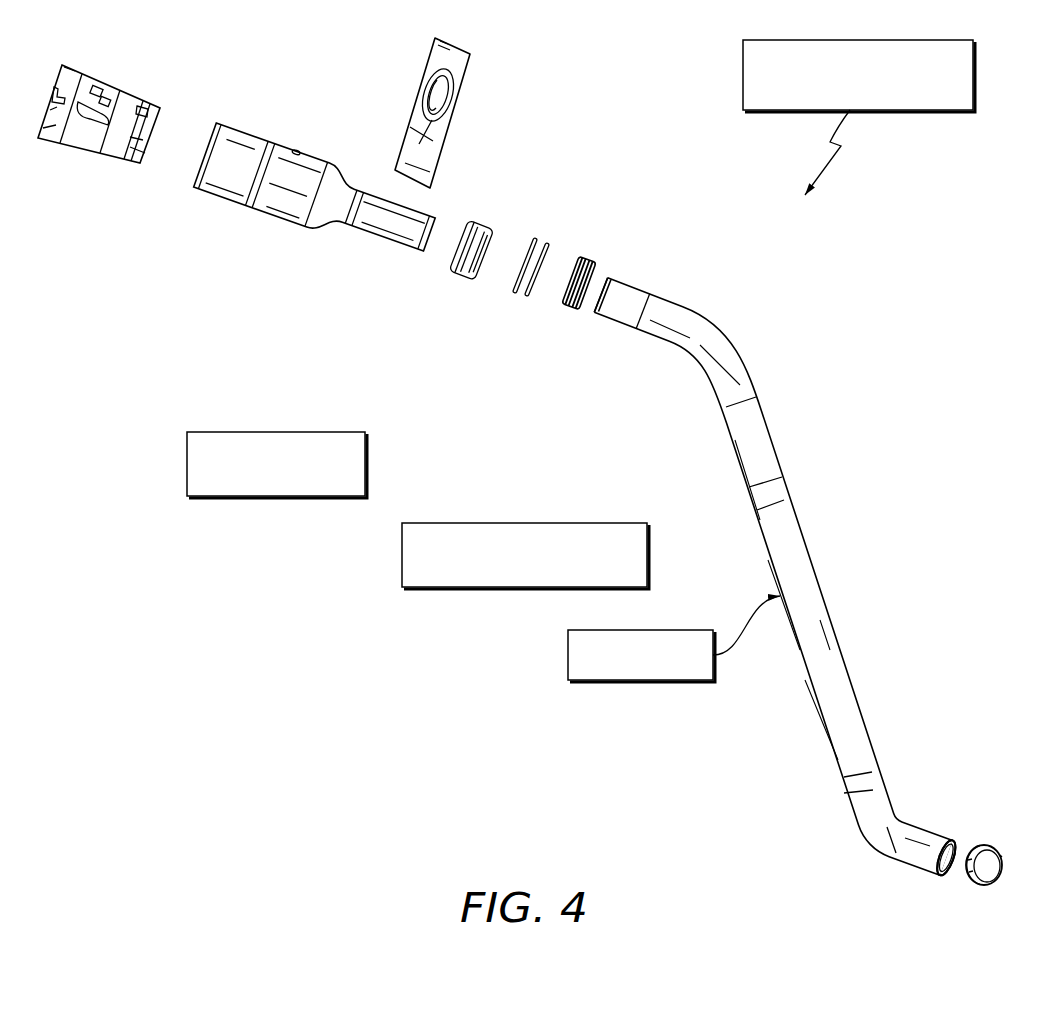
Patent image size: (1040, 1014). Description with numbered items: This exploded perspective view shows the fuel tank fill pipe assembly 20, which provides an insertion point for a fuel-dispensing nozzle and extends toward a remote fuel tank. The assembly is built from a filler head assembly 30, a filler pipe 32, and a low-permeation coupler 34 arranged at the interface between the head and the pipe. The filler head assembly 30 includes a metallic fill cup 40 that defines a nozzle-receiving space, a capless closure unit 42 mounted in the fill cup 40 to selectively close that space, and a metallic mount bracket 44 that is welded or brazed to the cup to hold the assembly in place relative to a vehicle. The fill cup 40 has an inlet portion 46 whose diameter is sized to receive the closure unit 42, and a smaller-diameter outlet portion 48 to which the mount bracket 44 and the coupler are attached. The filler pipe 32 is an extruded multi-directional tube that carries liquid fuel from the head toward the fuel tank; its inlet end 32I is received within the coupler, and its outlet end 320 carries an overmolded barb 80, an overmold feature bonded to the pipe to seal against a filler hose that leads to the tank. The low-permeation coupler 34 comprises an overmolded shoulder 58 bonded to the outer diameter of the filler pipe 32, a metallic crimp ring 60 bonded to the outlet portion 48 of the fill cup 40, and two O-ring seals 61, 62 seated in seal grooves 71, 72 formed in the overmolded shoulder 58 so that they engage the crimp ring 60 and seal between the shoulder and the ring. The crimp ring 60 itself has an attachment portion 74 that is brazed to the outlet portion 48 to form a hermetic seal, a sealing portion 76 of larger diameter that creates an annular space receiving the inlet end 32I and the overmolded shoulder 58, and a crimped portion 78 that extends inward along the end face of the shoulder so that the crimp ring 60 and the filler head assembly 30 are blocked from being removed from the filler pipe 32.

The fuel tank fill pipe assembly 20 is at (800, 40).
The filler head assembly 30 is at (240, 432).
The filler pipe 32 is at (621, 630).
The inlet end 32I is at (600, 285).
The outlet end 320 is at (957, 843).
The low-permeation coupler 34 is at (592, 523).
The fill cup 40 is at (278, 432).
The closure unit 42 is at (277, 432).
The mount bracket 44 is at (397, 141).
The inlet portion 46 is at (288, 143).
The outlet portion 48 is at (427, 205).
The overmolded shoulder 58 is at (517, 523).
The crimp ring 60 is at (517, 523).
The O-ring seal 61 is at (517, 523).
The O-ring seal 62 is at (517, 523).
The seal groove 71 is at (585, 258).
The seal groove 72 is at (590, 265).
The attachment portion 74 is at (466, 217).
The sealing portion 76 is at (483, 218).
The crimped portion 78 is at (498, 225).
The overmolded barb 80 is at (977, 893).